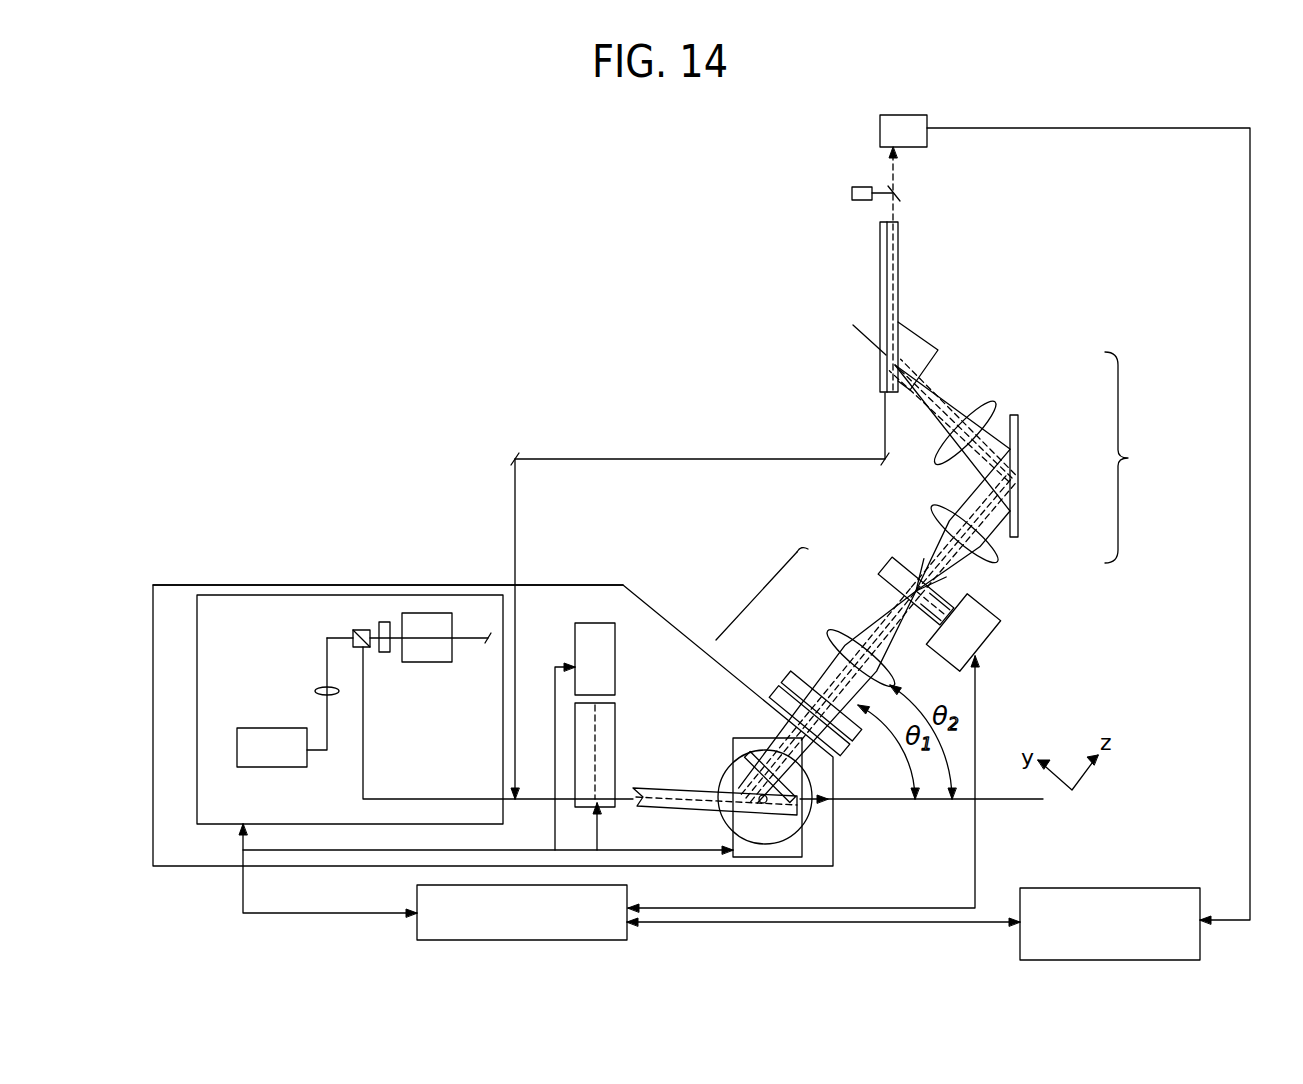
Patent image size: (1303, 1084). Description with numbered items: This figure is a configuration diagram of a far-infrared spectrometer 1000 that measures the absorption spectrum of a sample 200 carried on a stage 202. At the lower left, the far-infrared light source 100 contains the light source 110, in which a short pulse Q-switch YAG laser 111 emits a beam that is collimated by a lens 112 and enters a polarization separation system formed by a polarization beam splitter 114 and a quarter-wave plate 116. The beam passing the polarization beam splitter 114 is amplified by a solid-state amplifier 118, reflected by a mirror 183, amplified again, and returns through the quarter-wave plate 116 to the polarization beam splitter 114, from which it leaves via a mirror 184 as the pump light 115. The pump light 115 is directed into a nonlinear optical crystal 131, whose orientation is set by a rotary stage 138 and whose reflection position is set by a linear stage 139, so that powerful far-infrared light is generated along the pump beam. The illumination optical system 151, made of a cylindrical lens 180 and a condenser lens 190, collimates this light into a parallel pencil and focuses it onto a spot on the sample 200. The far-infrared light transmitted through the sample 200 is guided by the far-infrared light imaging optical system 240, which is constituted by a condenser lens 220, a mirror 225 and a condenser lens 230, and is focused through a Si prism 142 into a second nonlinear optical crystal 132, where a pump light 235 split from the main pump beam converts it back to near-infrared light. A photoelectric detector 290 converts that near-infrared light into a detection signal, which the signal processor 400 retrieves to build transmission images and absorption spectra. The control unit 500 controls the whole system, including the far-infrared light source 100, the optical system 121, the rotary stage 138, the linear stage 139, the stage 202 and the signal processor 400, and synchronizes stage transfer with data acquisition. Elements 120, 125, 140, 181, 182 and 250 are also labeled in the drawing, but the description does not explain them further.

The far-infrared spectrometer 1000 is at (598, 293).
The far-infrared light source 100 is at (572, 585).
The light source 110 is at (503, 607).
The short pulse Q-switch YAG laser 111 is at (256, 728).
The lens 112 is at (318, 690).
The polarization beam splitter 114 is at (358, 630).
The quarter-wave plate 116 is at (387, 652).
The solid-state amplifier 118 is at (428, 662).
The pump light 115 is at (534, 800).
The driver 120 is at (615, 660).
The optical system 121 is at (615, 712).
The light beam 125 is at (624, 788).
The nonlinear optical crystal 131 is at (656, 808).
The nonlinear optical crystal 132 is at (880, 290).
The rotary stage 138 is at (726, 825).
The linear stage 139 is at (802, 845).
The mirror 140 is at (727, 770).
The Si prism 142 is at (915, 334).
The illumination optical system 151 is at (755, 594).
The cylindrical lens 180 is at (788, 685).
The first optical path 181 is at (330, 747).
The second optical path 182 is at (330, 637).
The mirror 183 is at (488, 645).
The mirror 184 is at (365, 800).
The condenser lens 190 is at (828, 631).
The sample 200 is at (888, 564).
The stage 202 is at (1000, 637).
The condenser lens 220 is at (998, 560).
The mirror 225 is at (1018, 440).
The condenser lens 230 is at (996, 402).
The pump light 235 is at (884, 440).
The far-infrared light imaging optical system 240 is at (1142, 457).
The light source 250 is at (852, 193).
The photoelectric detector 290 is at (927, 118).
The signal processor 400 is at (1130, 888).
The control unit 500 is at (627, 888).